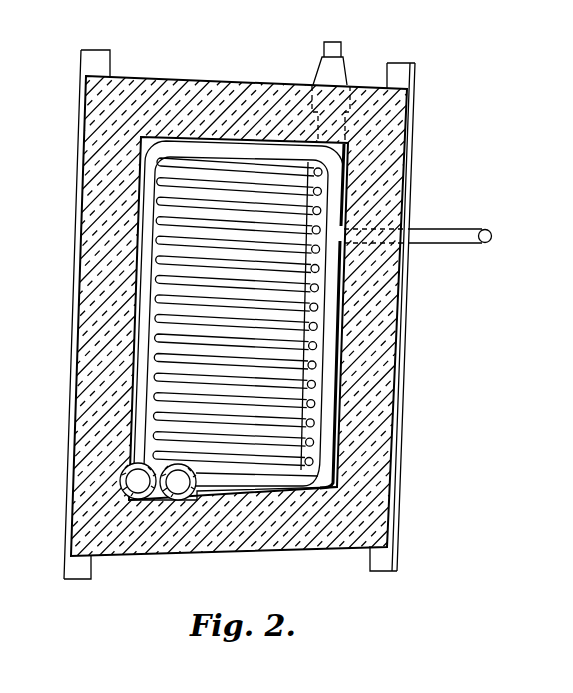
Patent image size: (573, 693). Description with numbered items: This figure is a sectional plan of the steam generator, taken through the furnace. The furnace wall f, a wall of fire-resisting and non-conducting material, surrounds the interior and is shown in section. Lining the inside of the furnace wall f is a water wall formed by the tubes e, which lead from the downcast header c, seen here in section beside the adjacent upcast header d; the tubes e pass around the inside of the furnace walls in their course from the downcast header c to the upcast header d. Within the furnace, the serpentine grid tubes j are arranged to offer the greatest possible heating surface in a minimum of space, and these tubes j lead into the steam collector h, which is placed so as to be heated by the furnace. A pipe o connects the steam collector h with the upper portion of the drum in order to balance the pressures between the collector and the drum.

The downcast header c is at (137, 483).
The upcast header d is at (181, 484).
The tubes e is at (337, 415).
The furnace wall f is at (328, 533).
The steam collector h is at (313, 332).
The tubes j is at (165, 378).
The pipe o is at (445, 230).